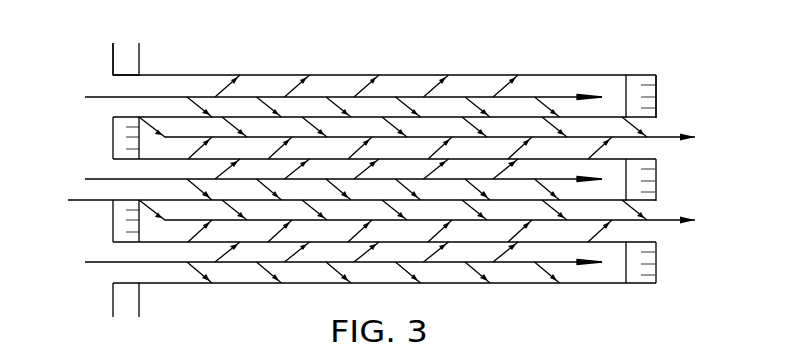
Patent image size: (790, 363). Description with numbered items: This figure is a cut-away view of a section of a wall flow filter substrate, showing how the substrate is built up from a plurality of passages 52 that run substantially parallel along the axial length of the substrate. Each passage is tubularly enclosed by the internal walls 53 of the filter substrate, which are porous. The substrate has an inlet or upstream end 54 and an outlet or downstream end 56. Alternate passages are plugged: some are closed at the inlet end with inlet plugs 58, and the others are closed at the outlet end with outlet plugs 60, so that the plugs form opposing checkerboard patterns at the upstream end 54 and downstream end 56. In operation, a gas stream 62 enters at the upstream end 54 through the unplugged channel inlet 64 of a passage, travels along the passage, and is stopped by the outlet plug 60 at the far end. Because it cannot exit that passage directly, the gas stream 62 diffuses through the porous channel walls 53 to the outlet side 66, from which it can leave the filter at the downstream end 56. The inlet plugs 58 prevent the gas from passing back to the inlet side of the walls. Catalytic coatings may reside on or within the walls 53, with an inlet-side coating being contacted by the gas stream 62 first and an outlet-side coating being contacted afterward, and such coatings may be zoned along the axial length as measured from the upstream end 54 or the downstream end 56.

The passages 52 is at (157, 119).
The internal walls 53 is at (362, 115).
The upstream end 54 is at (95, 44).
The downstream end 56 is at (670, 75).
The inlet plugs 58 is at (116, 60).
The outlet plugs 60 is at (650, 97).
The gas stream 62 is at (176, 97).
The channel inlet 64 is at (135, 93).
The outlet side 66 is at (650, 153).